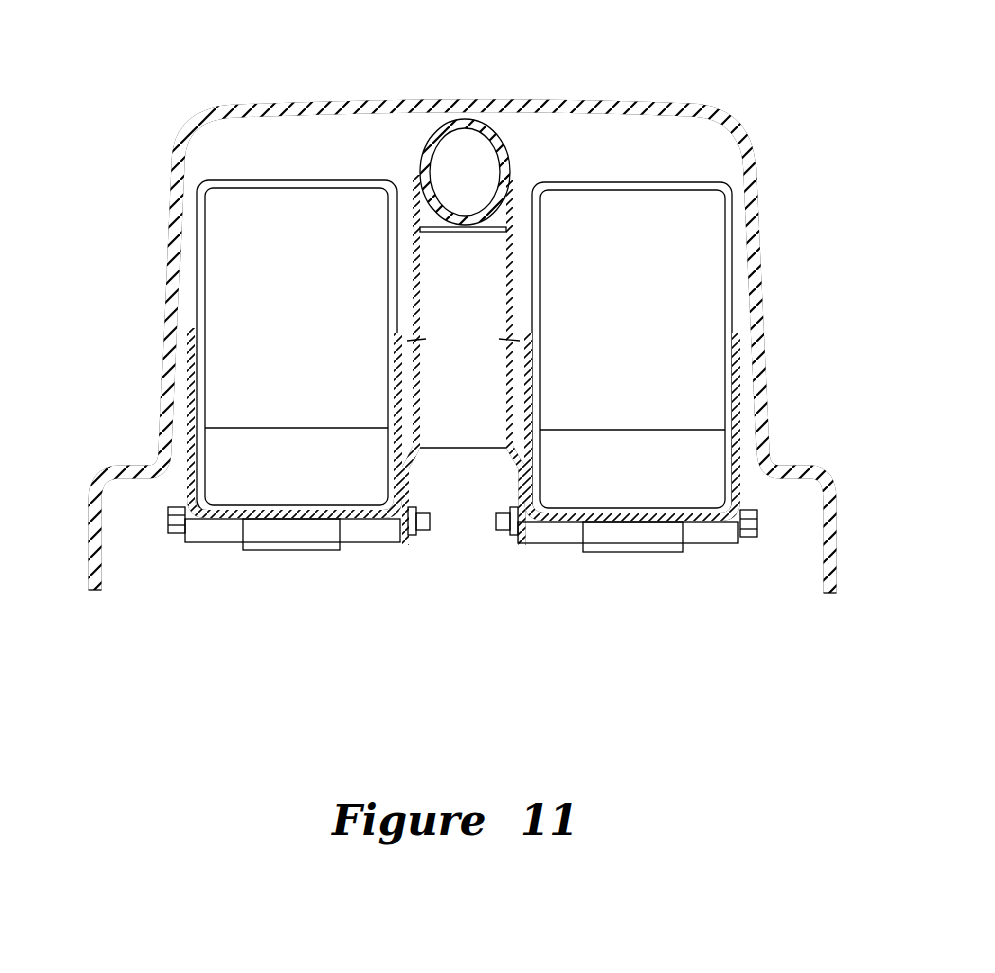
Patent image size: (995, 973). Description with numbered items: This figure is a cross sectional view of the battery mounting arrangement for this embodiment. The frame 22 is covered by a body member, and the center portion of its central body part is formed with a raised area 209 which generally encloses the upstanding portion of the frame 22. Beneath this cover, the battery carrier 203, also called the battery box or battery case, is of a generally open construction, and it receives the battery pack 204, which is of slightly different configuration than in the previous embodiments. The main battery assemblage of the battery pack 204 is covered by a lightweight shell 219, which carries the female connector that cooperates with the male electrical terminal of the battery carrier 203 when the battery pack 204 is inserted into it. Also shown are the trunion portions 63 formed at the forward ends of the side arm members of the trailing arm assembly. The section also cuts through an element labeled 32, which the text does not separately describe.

The raised area 209 is at (415, 180).
The frame 22 is at (468, 123).
The tube interior 32 is at (497, 140).
The battery pack 204 is at (262, 177).
The lightweight shell 219 is at (196, 284).
The battery carrier 203 is at (188, 403).
The trunion portion 63 is at (208, 540).